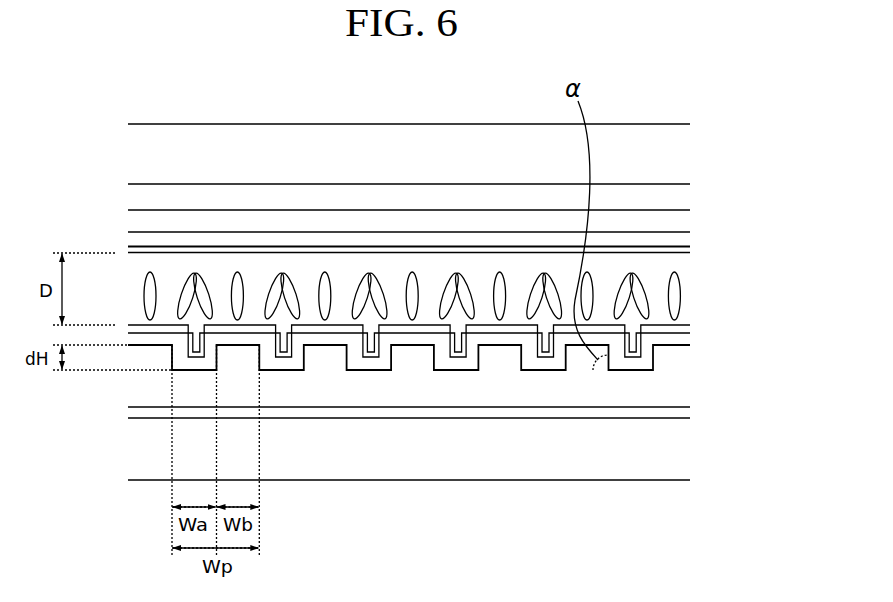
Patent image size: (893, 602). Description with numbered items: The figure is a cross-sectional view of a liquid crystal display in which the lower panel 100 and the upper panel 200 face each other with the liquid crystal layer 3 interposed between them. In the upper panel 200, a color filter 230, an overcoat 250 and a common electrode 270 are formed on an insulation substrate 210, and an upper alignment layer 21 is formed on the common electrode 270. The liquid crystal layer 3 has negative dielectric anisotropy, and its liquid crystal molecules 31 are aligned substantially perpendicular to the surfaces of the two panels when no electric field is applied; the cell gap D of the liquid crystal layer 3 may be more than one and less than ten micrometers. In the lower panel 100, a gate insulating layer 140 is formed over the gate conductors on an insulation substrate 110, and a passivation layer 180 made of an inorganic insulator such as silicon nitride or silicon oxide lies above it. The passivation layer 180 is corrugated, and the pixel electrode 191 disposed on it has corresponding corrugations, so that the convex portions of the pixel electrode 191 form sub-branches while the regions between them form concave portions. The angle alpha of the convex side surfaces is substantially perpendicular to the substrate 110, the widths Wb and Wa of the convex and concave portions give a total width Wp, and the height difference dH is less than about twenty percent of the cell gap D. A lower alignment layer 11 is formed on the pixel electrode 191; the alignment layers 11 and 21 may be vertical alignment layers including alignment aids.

The upper panel 200 is at (421, 204).
The insulation substrate 210 is at (673, 150).
The color filter 230 is at (673, 197).
The overcoat 250 is at (673, 221).
The common electrode 270 is at (675, 240).
The upper alignment layer 21 is at (675, 253).
The liquid crystal layer 3 is at (426, 289).
The liquid crystal molecules 31 is at (680, 296).
The lower panel 100 is at (421, 395).
The lower alignment layer 11 is at (683, 326).
The pixel electrode 191 is at (675, 340).
The passivation layer 180 is at (673, 378).
The gate insulating layer 140 is at (673, 412).
The insulation substrate 110 is at (673, 452).